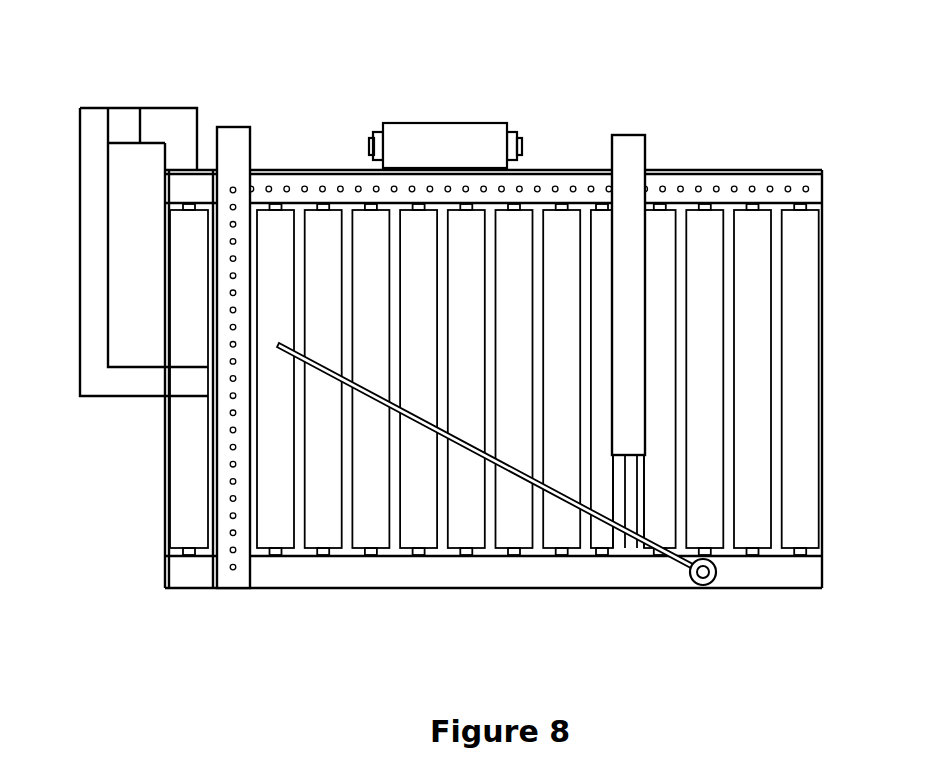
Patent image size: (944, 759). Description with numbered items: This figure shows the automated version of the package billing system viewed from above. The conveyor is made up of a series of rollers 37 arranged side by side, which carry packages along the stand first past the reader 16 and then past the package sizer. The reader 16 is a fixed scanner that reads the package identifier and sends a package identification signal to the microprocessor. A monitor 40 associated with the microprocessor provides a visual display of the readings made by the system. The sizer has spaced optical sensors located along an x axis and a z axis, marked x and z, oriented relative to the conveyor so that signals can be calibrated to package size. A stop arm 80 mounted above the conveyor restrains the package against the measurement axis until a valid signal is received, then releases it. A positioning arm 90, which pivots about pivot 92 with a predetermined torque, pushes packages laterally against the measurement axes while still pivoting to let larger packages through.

The reader 16 is at (638, 157).
The rollers 37 is at (800, 370).
The monitor 40 is at (473, 140).
The stop arm 80 is at (93, 328).
The positioning arm 90 is at (525, 470).
The pivot 92 is at (703, 586).
The x axis x is at (810, 182).
The z axis z is at (235, 577).